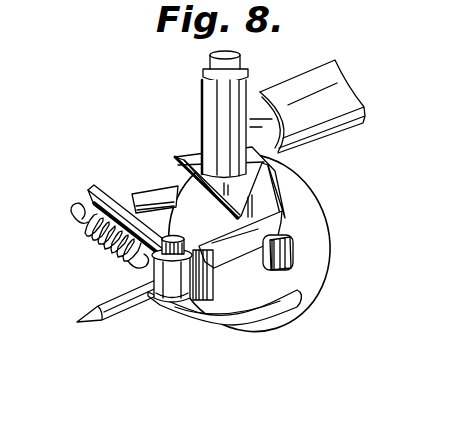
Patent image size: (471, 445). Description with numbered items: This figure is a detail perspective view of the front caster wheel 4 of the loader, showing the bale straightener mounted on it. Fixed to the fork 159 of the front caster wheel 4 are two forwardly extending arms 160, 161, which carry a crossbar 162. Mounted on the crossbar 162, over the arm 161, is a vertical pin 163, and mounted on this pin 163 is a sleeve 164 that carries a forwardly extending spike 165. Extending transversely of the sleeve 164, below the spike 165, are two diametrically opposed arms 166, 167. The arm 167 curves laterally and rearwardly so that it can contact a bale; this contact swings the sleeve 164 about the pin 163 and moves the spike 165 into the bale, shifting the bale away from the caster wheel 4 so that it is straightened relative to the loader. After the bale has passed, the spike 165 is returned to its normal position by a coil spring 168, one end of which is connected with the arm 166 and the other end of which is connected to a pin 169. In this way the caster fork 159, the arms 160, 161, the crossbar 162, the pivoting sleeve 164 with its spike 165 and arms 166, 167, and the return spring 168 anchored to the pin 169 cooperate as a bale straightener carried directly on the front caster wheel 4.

The caster wheel 4 is at (320, 248).
The fork 159 is at (255, 183).
The arm 160 is at (154, 197).
The arm 161 is at (282, 216).
The crossbar 162 is at (99, 186).
The vertical pin 163 is at (173, 236).
The sleeve 164 is at (180, 290).
The spike 165 is at (80, 322).
The arm 166 is at (133, 272).
The arm 167 is at (215, 318).
The coil spring 168 is at (90, 239).
The pin 169 is at (70, 206).